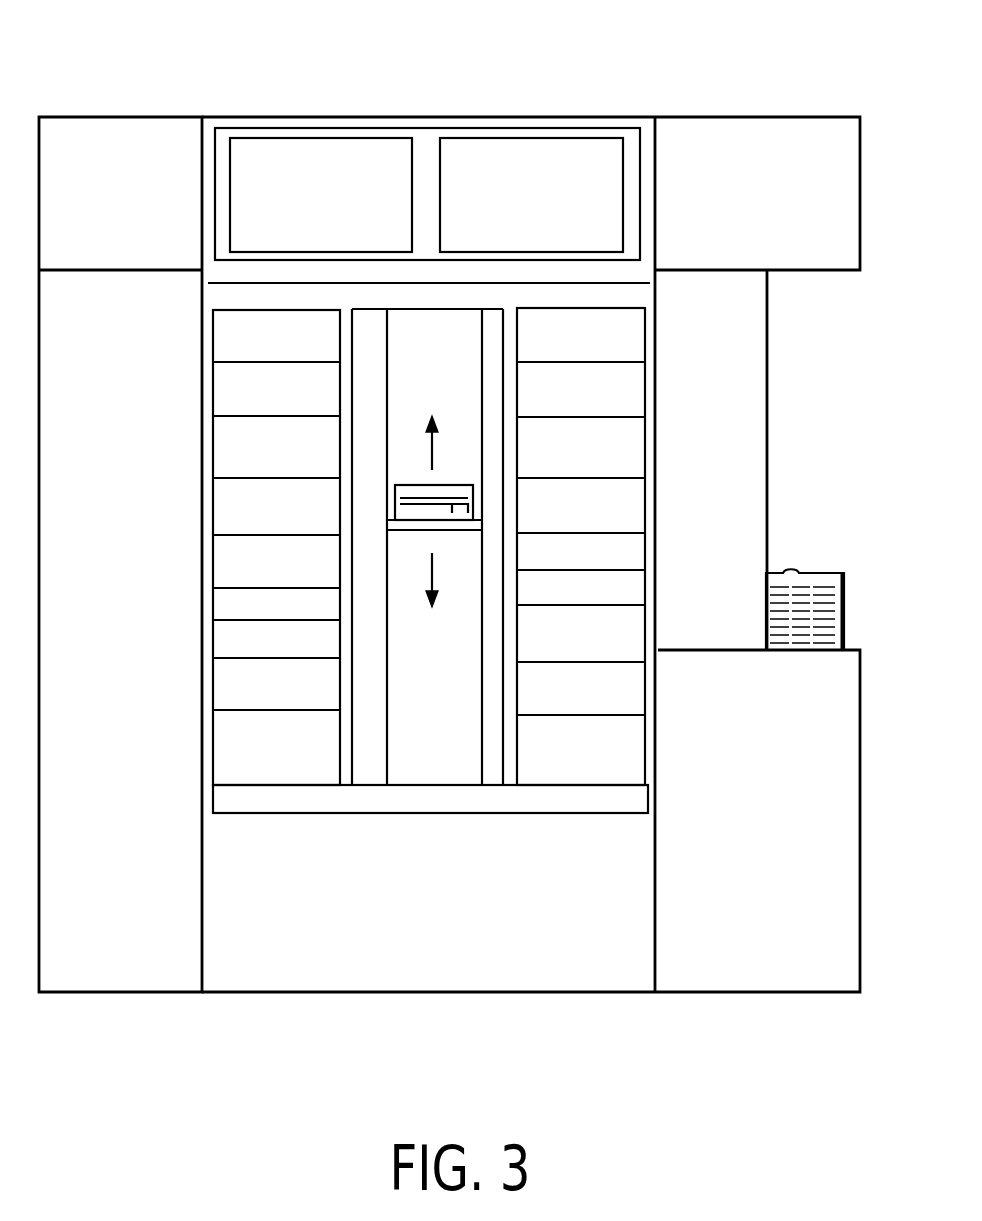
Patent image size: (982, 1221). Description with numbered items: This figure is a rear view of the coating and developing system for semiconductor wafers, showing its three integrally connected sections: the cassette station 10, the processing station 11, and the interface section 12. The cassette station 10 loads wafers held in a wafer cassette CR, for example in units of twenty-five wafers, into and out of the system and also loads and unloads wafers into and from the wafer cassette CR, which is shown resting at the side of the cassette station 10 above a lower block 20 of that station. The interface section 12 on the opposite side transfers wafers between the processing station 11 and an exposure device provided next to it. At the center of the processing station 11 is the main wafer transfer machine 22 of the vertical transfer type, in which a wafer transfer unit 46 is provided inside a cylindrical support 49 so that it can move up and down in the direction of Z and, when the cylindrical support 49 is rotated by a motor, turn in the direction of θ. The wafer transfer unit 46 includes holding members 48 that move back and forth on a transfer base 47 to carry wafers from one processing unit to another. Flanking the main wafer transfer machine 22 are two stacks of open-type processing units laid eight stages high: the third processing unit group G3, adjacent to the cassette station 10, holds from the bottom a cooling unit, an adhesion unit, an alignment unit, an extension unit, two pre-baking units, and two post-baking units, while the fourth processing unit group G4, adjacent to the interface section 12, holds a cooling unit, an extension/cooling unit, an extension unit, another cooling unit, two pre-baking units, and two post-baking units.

The cassette station 10 is at (765, 117).
The processing station 11 is at (437, 117).
The interface section 12 is at (119, 117).
The interface block 20 is at (856, 649).
The main wafer transfer machine 22 is at (452, 440).
The wafer transfer unit 46 is at (412, 472).
The transfer base 47 is at (400, 531).
The holding members 48 is at (450, 530).
The cylindrical support 49 is at (494, 778).
The wafer cassette CR is at (825, 573).
The third processing unit group G3 is at (619, 306).
The fourth processing unit group G4 is at (238, 306).